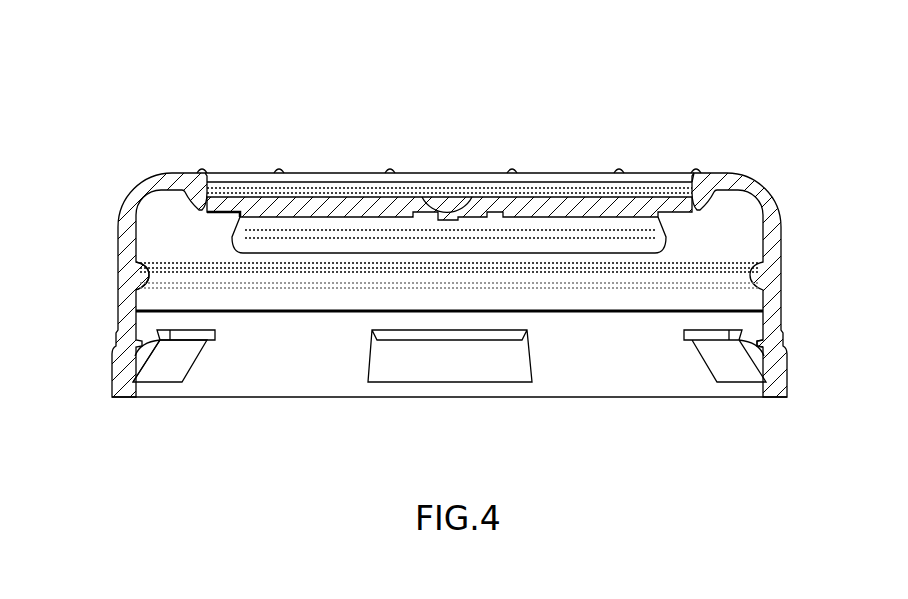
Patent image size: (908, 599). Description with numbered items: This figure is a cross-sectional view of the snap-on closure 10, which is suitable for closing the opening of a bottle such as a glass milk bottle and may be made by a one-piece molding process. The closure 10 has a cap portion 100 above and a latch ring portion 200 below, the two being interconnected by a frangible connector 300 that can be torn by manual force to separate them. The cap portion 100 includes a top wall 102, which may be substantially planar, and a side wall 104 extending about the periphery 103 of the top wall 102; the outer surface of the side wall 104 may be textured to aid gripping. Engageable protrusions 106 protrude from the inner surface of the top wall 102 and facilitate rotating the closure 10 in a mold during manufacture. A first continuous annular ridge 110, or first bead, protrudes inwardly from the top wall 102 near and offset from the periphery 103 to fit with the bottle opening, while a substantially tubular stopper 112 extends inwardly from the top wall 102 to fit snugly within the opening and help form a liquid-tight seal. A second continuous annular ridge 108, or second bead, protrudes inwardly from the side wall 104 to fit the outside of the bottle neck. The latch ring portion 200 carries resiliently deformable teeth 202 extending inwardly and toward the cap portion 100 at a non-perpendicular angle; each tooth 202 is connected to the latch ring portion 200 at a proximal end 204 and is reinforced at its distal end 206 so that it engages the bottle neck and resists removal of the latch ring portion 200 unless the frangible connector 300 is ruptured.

The closure 10 is at (128, 88).
The cap portion 100 is at (747, 175).
The top wall 102 is at (333, 172).
The periphery 103 is at (707, 175).
The side wall 104 is at (781, 267).
The engageable protrusions 106 is at (540, 212).
The second continuous annular ridge 108 is at (147, 278).
The first continuous annular ridge 110 is at (203, 207).
The stopper 112 is at (655, 238).
The latch ring portion 200 is at (110, 380).
The resiliently deformable teeth 202 is at (170, 367).
The proximal end 204 is at (145, 372).
The distal end 206 is at (220, 333).
The frangible connector 300 is at (770, 342).